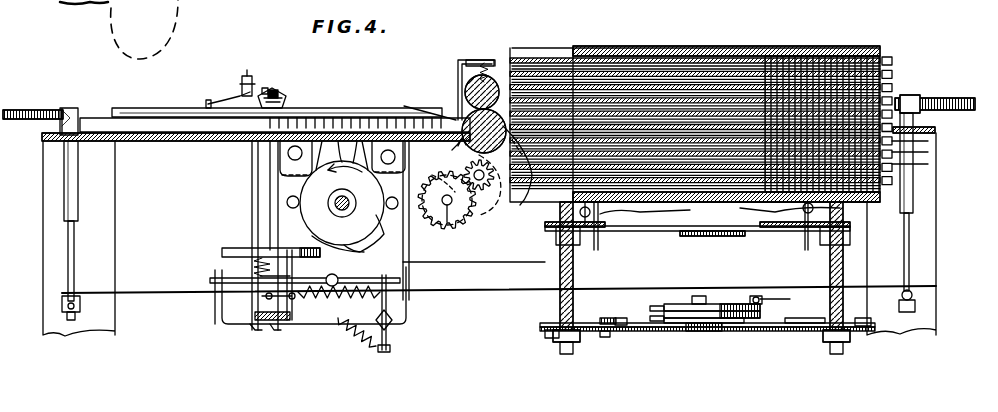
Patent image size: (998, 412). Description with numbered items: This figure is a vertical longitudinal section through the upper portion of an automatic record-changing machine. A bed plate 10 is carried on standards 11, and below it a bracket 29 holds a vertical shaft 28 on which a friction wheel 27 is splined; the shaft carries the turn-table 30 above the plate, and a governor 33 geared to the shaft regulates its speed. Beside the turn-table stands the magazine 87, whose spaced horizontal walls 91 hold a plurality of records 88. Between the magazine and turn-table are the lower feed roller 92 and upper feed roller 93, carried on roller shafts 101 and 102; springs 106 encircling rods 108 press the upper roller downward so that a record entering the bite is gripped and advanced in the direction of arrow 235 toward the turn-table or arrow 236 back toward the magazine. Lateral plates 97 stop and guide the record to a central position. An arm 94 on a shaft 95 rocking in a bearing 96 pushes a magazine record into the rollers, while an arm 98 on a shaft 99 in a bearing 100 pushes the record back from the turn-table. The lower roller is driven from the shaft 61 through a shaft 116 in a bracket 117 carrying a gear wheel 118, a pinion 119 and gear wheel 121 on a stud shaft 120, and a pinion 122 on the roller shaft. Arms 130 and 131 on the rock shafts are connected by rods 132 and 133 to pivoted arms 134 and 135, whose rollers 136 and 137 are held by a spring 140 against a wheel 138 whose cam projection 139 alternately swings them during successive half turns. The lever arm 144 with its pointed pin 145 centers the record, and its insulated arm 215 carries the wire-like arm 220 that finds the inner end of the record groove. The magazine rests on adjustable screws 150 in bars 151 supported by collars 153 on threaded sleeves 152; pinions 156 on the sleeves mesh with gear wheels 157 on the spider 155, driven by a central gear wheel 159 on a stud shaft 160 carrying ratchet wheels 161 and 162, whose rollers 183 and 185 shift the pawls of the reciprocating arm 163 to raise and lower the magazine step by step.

The bed plate 10 is at (172, 142).
The standards 11 is at (43, 207).
The friction wheel 27 is at (228, 251).
The vertical shaft 28 is at (258, 166).
The bracket 29 is at (255, 325).
The turn-table 30 is at (95, 118).
The governor 33 is at (392, 317).
The shaft 61 is at (335, 201).
The magazine 87 is at (798, 50).
The sound reproducing records 88 is at (928, 165).
The horizontal walls 91 is at (700, 78).
The lower feed roller 92 is at (417, 103).
The upper feed roller 93 is at (466, 63).
The arm 94 is at (958, 98).
The shaft 95 is at (909, 256).
The bearing 96 is at (913, 198).
The lateral plates 97 is at (160, 104).
The arm 98 is at (30, 110).
The shaft 99 is at (68, 244).
The bearing 100 is at (64, 171).
The roller shaft 101 is at (530, 196).
The roller shaft 102 is at (466, 87).
The springs 106 is at (488, 66).
The rods 108 is at (470, 58).
The shaft 116 is at (444, 226).
The bracket 117 is at (430, 218).
The gear wheel 118 is at (472, 221).
The pinion 119 is at (484, 201).
The stud shaft 120 is at (452, 177).
The gear wheel 121 is at (510, 191).
The pinion 122 is at (532, 56).
The arm 130 is at (915, 299).
The arm 131 is at (62, 307).
The rod 132 is at (458, 290).
The rod 133 is at (170, 284).
The arm 134 is at (408, 258).
The arm 135 is at (298, 222).
The roller 136 is at (386, 215).
The roller 137 is at (288, 203).
The wheel 138 is at (343, 128).
The cam projection 139 is at (368, 245).
The spring 140 is at (358, 296).
The lever arm 144 is at (278, 88).
The pointed pin 145 is at (282, 101).
The adjustable screws 150 is at (697, 226).
The bars 151 is at (718, 234).
The screw threaded sleeves 152 is at (573, 263).
The collars 153 is at (598, 237).
The brace plate or spider 155 is at (664, 324).
The pinions 156 is at (558, 330).
The gear wheels 157 is at (636, 329).
The gear wheel 159 is at (740, 331).
The stud shaft 160 is at (708, 298).
The ratchet wheel 161 is at (682, 311).
The ratchet wheel 162 is at (672, 304).
The arm 163 is at (785, 300).
The roller 183 is at (640, 327).
The roller 185 is at (656, 306).
The arm 215 is at (258, 85).
The wire-like arm 220 is at (214, 101).
The arrow 235 is at (463, 116).
The arrow 236 is at (456, 151).